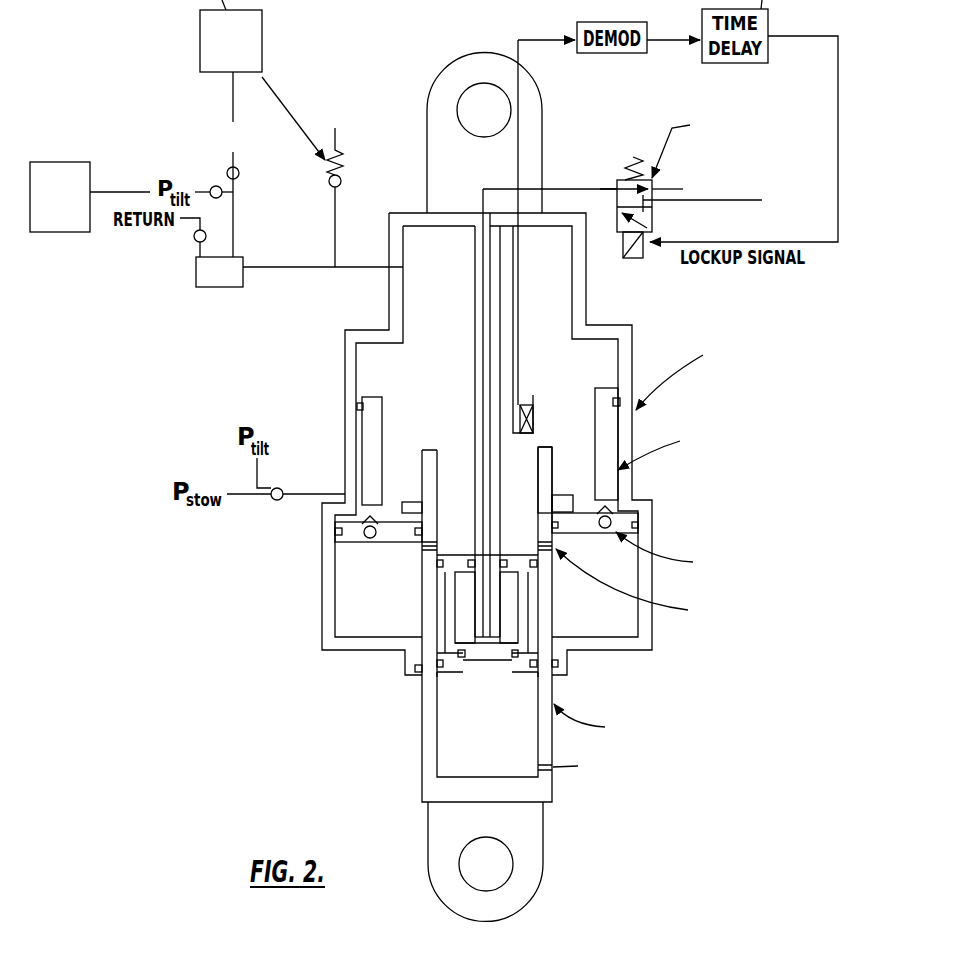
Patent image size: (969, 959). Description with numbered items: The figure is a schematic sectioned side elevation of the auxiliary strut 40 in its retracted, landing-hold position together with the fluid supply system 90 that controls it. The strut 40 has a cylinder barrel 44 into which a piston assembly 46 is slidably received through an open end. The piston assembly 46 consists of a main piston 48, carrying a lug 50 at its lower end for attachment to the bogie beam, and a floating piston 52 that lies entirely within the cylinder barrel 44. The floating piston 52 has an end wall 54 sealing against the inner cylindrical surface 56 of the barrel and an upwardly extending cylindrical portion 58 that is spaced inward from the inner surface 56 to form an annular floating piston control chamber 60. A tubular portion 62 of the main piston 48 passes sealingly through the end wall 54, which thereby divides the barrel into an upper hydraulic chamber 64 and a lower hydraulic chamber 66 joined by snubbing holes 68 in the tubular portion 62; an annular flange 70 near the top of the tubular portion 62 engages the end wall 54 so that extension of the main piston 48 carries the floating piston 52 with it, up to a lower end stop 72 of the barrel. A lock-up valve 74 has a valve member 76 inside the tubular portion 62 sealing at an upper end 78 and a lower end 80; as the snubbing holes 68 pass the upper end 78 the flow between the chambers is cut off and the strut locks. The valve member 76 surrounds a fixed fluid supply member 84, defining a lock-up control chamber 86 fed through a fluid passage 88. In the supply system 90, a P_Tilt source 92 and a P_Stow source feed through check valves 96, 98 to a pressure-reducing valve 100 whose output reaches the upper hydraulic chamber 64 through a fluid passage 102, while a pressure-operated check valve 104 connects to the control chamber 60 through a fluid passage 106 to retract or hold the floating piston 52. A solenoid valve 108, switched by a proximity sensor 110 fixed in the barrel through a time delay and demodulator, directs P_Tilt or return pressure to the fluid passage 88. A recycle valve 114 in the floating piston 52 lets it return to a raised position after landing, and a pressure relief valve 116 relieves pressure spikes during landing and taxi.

The auxiliary strut 40 is at (303, 350).
The cylinder barrel 44 is at (627, 433).
The piston assembly 46 is at (408, 602).
The main piston 48 is at (430, 750).
The lug 50 is at (528, 875).
The floating piston 52 is at (360, 458).
The end wall 54 is at (398, 538).
The inner cylindrical surface 56 is at (337, 623).
The cylindrical portion 58 is at (372, 424).
The floating piston control chamber 60 is at (617, 487).
The tubular portion 62 is at (543, 468).
The upper hydraulic chamber 64 is at (553, 305).
The lower hydraulic chamber 66 is at (623, 618).
The snubbing holes 68 is at (437, 545).
The annular flange 70 is at (413, 505).
The lower end stop 72 is at (378, 637).
The lock-up valve 74 is at (477, 682).
The valve member 76 is at (535, 632).
The upper end 78 is at (533, 567).
The lower end 80 is at (547, 667).
The fluid supply member 84 is at (478, 338).
The lock-up control chamber 86 is at (465, 592).
The fluid passage 88 is at (486, 628).
The fluid supply system 90 is at (158, 100).
The source of P_Tilt fluid 92 is at (75, 228).
The check valve 96 is at (212, 186).
The check valve 98 is at (240, 172).
The pressure-reducing valve 100 is at (235, 268).
The fluid passage 102 is at (358, 265).
The pressure-operated check valve 104 is at (283, 488).
The fluid passage 106 is at (312, 497).
The solenoid valve 108 is at (617, 189).
The proximity sensor 110 is at (527, 405).
The recycle valve 114 is at (611, 518).
The pressure relief valve 116 is at (345, 177).